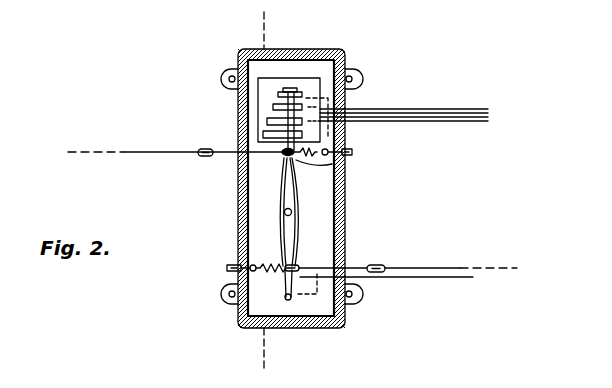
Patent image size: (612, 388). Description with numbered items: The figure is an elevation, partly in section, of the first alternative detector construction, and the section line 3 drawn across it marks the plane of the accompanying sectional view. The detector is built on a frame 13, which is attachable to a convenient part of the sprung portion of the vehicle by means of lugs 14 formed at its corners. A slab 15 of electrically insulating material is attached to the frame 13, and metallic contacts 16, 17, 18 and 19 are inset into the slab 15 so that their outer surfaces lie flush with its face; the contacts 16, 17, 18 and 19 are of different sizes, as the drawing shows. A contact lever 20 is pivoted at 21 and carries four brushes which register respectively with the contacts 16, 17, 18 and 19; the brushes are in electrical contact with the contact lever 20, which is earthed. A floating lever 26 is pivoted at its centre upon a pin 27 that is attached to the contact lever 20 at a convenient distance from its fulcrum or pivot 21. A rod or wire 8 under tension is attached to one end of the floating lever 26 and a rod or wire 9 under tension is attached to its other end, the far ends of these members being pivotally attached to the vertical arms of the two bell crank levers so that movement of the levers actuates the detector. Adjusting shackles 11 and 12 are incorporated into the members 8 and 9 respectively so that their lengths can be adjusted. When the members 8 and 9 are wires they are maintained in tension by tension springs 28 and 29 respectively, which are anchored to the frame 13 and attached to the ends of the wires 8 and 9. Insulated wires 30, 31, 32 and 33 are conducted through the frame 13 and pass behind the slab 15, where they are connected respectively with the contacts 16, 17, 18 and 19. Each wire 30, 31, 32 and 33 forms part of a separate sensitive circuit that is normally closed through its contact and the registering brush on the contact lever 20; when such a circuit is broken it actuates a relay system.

The section line 3- 3 is at (256, 26).
The rod or wire under tension 8 is at (135, 152).
The rod or wire under tension 9 is at (448, 268).
The adjusting shackle 11 is at (205, 158).
The adjusting shackle 12 is at (385, 273).
The frame 13 is at (276, 50).
The lug 14 is at (350, 80).
The slab of electrically insulating material 15 is at (308, 82).
The metallic contact 16 is at (278, 93).
The metallic contact 17 is at (273, 107).
The metallic contact 18 is at (267, 121).
The metallic contact 19 is at (263, 135).
The contact lever 20 is at (308, 98).
The pivot 21 is at (288, 302).
The floating lever 26 is at (293, 185).
The pin 27 is at (284, 213).
The tension spring 28 is at (352, 153).
The tension spring 29 is at (228, 270).
The insulated wire 30 is at (416, 109).
The insulated wire 31 is at (454, 113).
The insulated wire 32 is at (426, 122).
The insulated wire 33 is at (468, 124).